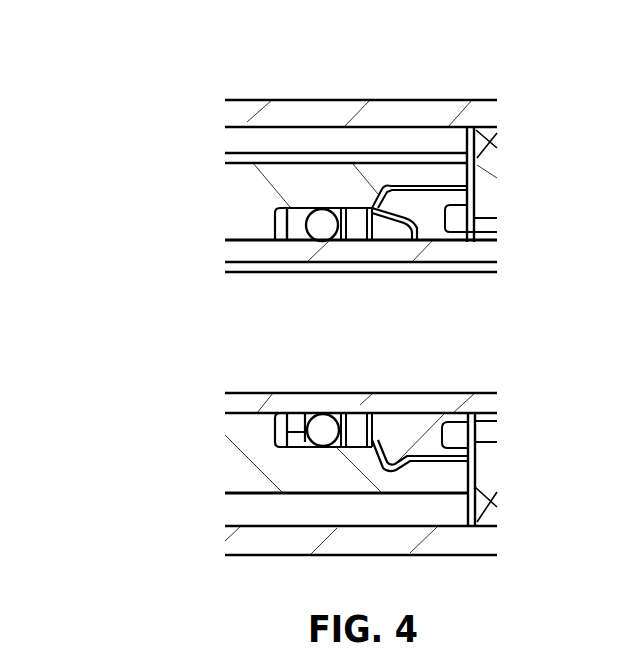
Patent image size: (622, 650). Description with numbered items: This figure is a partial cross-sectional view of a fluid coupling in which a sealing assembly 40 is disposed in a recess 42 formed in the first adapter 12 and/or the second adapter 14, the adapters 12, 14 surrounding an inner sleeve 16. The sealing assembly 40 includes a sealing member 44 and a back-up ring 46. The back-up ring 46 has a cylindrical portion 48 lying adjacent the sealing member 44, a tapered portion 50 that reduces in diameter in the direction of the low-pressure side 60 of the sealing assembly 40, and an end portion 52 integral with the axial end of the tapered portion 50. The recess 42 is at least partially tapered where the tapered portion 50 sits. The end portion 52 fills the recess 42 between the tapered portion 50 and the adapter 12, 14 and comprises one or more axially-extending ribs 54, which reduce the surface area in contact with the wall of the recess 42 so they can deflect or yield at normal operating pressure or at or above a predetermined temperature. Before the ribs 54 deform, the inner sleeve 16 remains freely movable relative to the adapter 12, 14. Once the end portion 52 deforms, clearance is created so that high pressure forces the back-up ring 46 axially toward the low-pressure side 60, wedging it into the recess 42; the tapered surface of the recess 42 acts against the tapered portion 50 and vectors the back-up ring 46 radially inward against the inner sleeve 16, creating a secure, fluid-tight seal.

The first adapter 12 is at (237, 218).
The second adapter 14 is at (266, 180).
The inner sleeve 16 is at (245, 243).
The sealing assembly 40 is at (295, 238).
The recess 42 is at (288, 207).
The sealing member 44 is at (320, 212).
The back-up ring 46 is at (404, 210).
The cylindrical portion 48 is at (353, 216).
The tapered portion 50 is at (393, 236).
The end portion 52 is at (432, 231).
The axially-extending rib 54 is at (412, 231).
The low-pressure side 60 is at (465, 262).